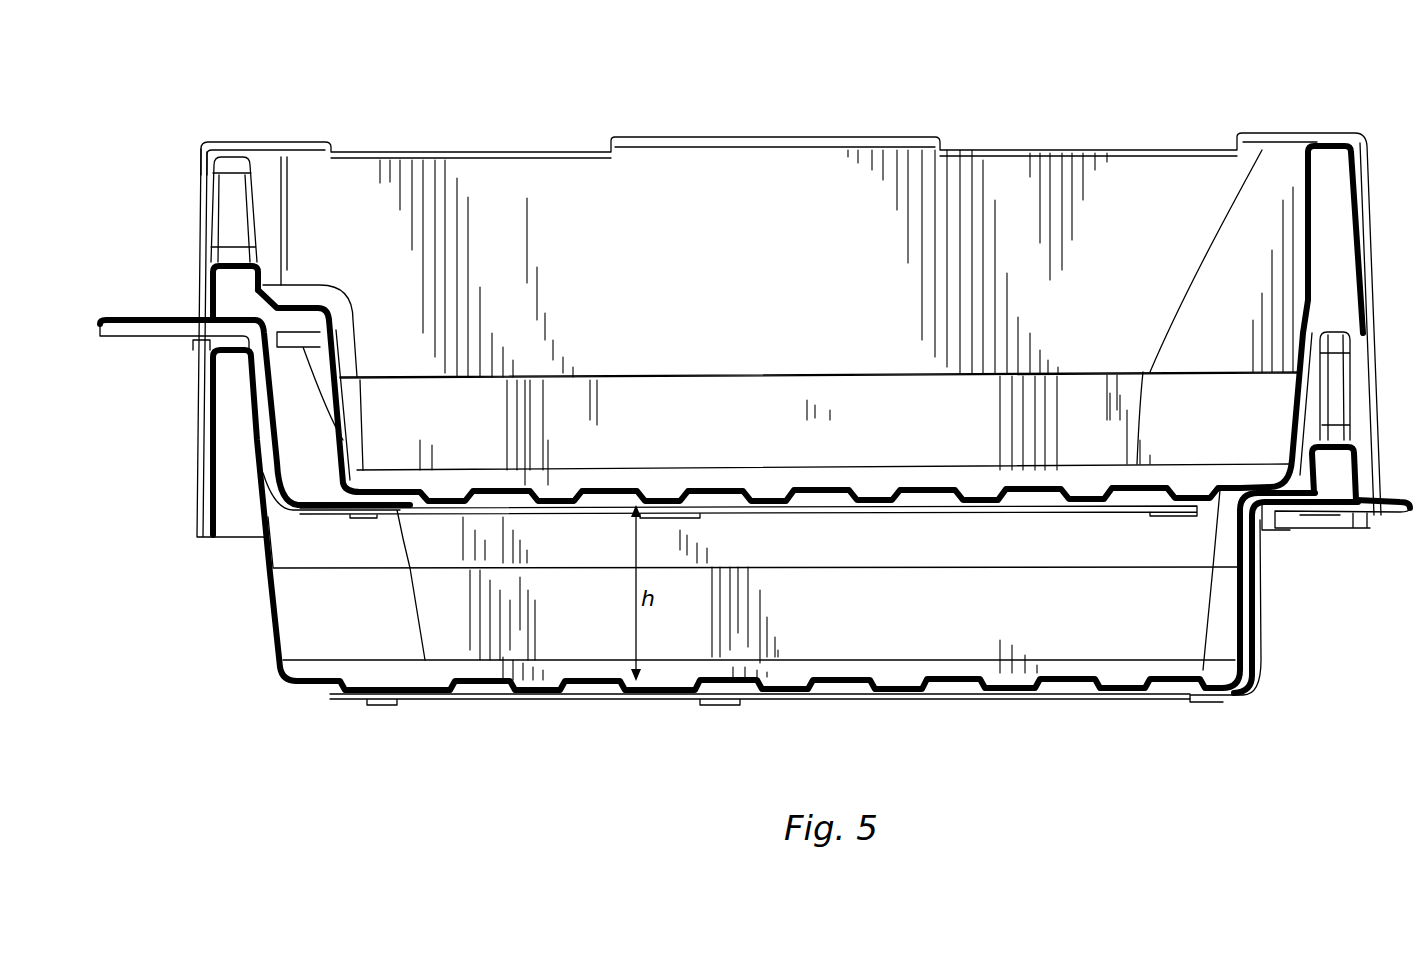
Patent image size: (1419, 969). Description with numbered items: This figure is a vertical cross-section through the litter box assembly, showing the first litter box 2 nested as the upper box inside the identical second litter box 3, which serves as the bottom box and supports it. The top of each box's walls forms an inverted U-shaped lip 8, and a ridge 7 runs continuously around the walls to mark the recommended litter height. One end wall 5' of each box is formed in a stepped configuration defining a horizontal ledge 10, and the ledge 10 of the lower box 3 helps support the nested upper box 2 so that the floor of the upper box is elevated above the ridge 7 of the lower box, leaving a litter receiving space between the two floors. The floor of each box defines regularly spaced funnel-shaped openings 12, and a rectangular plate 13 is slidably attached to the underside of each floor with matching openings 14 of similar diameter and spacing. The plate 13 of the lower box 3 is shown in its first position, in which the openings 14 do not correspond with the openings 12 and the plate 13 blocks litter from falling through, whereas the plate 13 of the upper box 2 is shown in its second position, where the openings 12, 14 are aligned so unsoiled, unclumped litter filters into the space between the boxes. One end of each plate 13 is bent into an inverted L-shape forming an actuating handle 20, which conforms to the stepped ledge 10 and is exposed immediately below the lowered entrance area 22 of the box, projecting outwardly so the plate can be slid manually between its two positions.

The first litter box 2 is at (1223, 444).
The second litter box 3 is at (337, 641).
The end wall 5' is at (404, 406).
The ridge 7 is at (711, 376).
The inverted U-shaped lip 8 is at (1367, 125).
The horizontal ledge 10 is at (300, 288).
The openings 12 is at (795, 672).
The rectangular plate 13 is at (610, 513).
The openings 14 is at (880, 510).
The actuating handle 20 is at (143, 318).
The lowered entrance area 22 is at (183, 195).